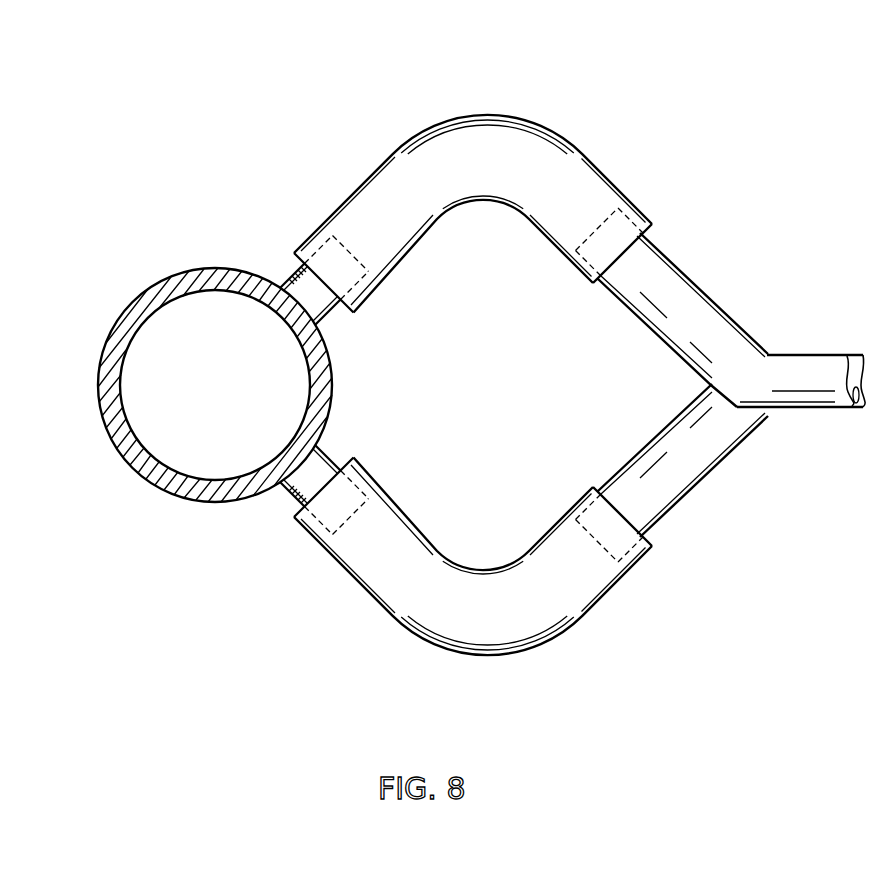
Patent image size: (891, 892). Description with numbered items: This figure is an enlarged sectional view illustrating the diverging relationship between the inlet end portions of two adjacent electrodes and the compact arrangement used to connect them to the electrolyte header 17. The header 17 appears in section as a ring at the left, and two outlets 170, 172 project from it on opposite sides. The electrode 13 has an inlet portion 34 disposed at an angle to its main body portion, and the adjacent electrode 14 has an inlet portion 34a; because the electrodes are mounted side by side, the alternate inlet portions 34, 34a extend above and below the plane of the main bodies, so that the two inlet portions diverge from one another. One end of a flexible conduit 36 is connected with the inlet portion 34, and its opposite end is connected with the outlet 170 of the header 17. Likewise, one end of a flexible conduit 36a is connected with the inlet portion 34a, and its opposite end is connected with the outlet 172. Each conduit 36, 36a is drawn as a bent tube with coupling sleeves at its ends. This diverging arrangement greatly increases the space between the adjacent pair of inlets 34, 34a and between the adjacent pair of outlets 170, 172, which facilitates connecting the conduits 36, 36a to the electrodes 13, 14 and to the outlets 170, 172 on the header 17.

The electrode 13 is at (782, 340).
The electrode 14 is at (735, 466).
The header 17 is at (156, 500).
The inlet portion 34 is at (693, 308).
The inlet portion 34a is at (675, 480).
The flexible conduit 36 is at (490, 147).
The flexible conduit 36a is at (486, 612).
The outlet 170 is at (284, 280).
The outlet 172 is at (287, 502).